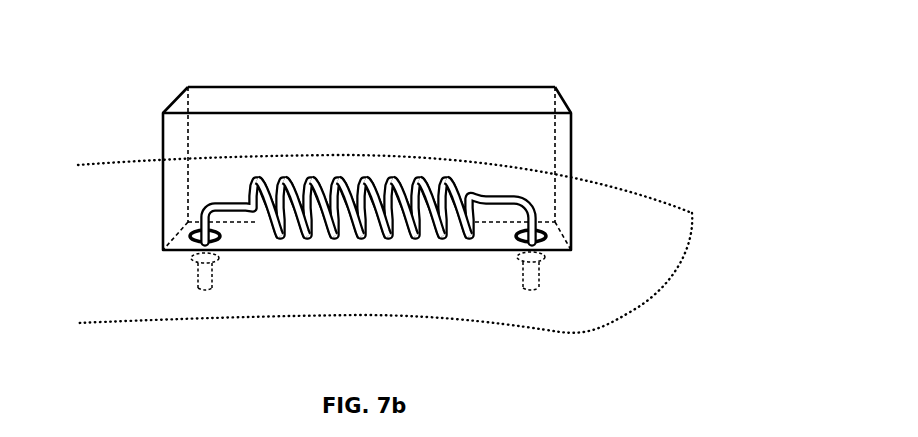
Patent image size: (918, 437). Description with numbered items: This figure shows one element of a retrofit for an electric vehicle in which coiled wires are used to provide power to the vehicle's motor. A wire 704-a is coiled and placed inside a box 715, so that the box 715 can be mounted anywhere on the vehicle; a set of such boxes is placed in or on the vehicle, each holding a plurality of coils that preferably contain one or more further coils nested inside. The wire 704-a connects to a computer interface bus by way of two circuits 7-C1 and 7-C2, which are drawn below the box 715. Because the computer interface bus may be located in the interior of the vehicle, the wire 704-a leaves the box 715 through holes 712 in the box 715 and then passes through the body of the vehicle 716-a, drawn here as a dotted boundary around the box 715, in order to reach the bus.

The box 715 is at (160, 95).
The wire 704-a is at (241, 187).
The holes 712 is at (506, 259).
The circuit 7-C1 is at (190, 277).
The circuit 7-C2 is at (550, 273).
The body of the vehicle 716-a is at (700, 209).